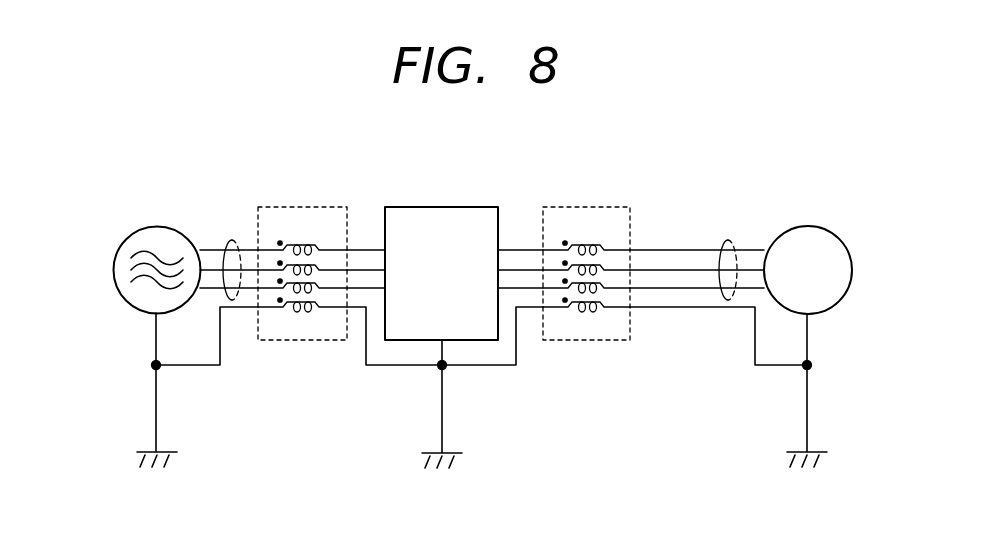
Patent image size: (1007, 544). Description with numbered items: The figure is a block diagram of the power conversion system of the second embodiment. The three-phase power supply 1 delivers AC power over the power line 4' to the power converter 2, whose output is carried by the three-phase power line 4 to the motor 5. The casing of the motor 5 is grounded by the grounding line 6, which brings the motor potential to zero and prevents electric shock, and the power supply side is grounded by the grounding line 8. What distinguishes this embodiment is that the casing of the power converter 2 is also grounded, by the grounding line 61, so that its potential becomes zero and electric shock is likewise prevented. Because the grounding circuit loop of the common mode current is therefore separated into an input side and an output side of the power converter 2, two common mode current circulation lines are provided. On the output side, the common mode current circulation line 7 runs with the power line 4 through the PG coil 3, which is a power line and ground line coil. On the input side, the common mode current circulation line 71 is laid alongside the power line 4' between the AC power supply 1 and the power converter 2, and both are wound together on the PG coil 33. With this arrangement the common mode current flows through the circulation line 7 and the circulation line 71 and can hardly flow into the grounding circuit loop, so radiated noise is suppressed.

The three-phase power supply 1 is at (157, 226).
The power converter 2 is at (449, 205).
The PG coil 3 is at (598, 205).
The PG coil 33 is at (299, 206).
The three-phase power line 4 is at (728, 237).
The power line 4' is at (233, 238).
The motor 5 is at (807, 226).
The grounding line 6 is at (808, 410).
The grounding line 61 is at (442, 410).
The common mode current circulation line 7 is at (685, 310).
The common mode current circulation line 71 is at (194, 367).
The grounding line 8 is at (157, 407).